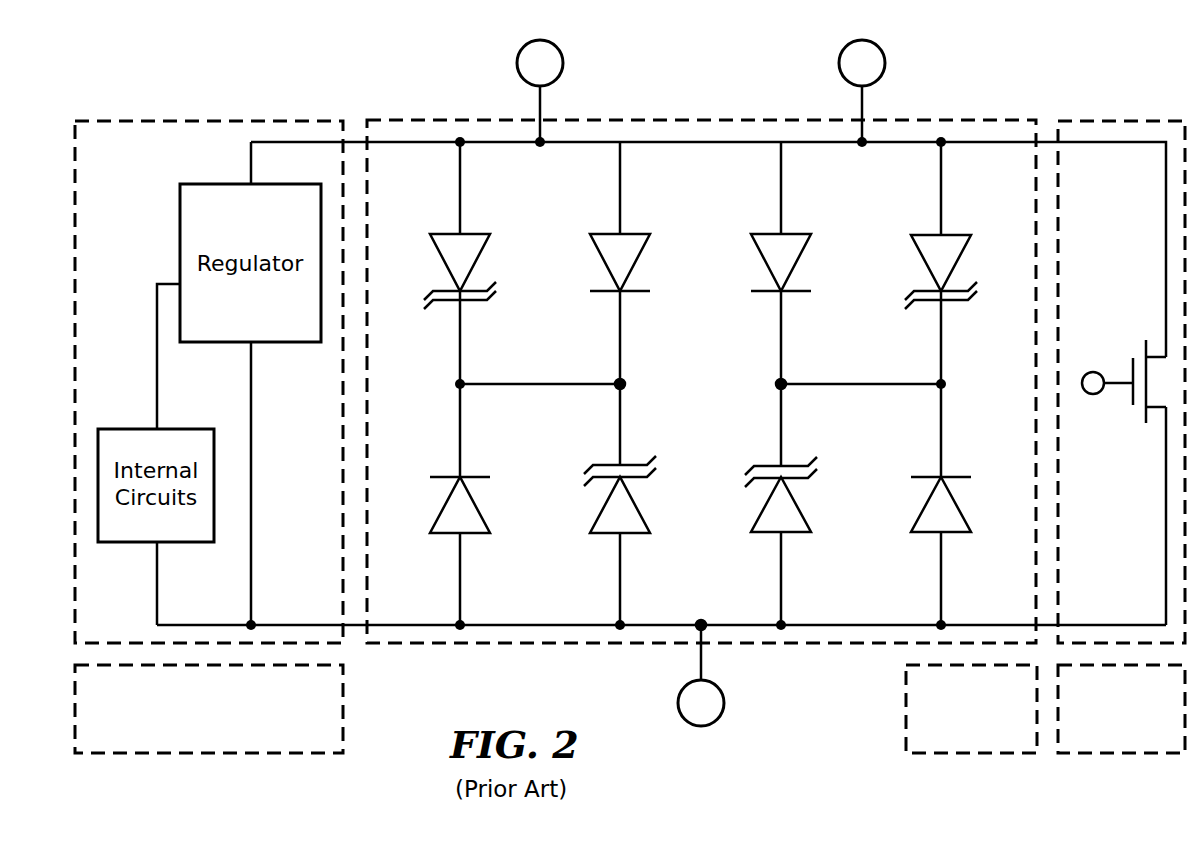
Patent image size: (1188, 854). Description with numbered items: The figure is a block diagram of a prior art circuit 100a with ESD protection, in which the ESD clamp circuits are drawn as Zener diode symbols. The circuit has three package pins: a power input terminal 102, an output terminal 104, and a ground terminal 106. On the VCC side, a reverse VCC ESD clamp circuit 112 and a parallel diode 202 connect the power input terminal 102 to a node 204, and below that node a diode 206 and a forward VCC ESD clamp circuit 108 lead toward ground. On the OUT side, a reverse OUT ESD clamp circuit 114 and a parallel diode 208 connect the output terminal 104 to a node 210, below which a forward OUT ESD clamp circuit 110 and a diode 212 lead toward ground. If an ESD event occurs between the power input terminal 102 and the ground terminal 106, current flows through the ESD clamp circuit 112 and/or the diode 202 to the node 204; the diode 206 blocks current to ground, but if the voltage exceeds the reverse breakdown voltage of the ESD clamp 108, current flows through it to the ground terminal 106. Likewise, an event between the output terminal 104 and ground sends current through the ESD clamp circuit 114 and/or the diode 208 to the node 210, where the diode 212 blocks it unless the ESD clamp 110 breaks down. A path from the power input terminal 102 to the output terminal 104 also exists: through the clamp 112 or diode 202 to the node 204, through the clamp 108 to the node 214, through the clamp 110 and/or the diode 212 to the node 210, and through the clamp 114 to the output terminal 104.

The circuit 100a is at (193, 68).
The power input terminal 102 is at (565, 63).
The output terminal 104 is at (838, 63).
The ground terminal 106 is at (725, 701).
The forward VCC ESD clamp circuit 108 is at (583, 481).
The forward OUT ESD clamp circuit 110 is at (817, 457).
The reverse VCC ESD clamp circuit 112 is at (495, 290).
The reverse OUT ESD clamp circuit 114 is at (905, 298).
The diode 202 is at (598, 253).
The node 204 is at (624, 384).
The diode 206 is at (478, 505).
The diode 208 is at (803, 251).
The node 210 is at (778, 384).
The diode 212 is at (921, 508).
The node 214 is at (533, 625).